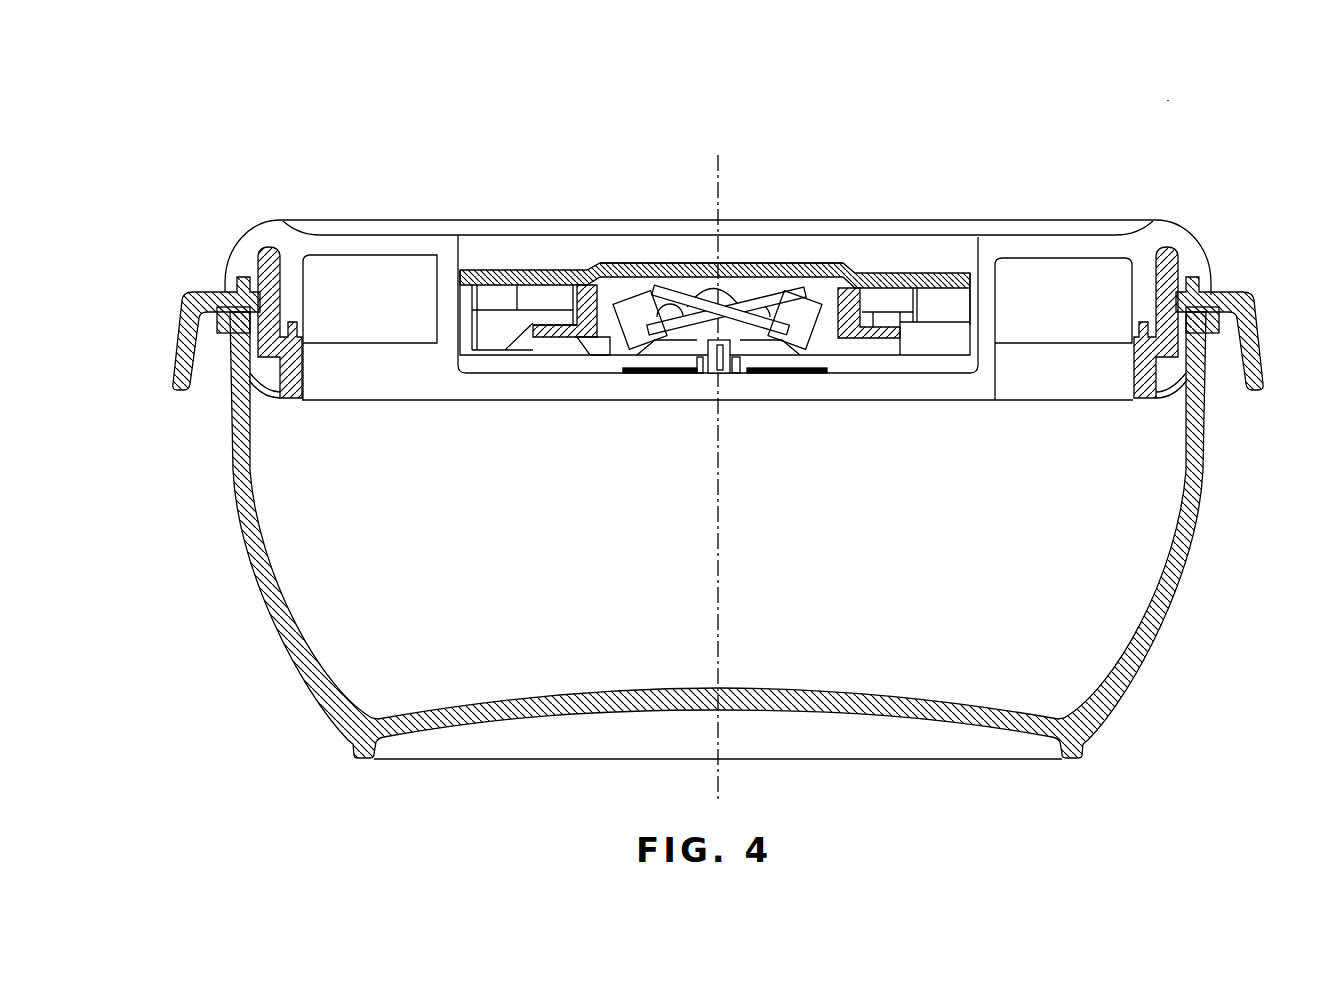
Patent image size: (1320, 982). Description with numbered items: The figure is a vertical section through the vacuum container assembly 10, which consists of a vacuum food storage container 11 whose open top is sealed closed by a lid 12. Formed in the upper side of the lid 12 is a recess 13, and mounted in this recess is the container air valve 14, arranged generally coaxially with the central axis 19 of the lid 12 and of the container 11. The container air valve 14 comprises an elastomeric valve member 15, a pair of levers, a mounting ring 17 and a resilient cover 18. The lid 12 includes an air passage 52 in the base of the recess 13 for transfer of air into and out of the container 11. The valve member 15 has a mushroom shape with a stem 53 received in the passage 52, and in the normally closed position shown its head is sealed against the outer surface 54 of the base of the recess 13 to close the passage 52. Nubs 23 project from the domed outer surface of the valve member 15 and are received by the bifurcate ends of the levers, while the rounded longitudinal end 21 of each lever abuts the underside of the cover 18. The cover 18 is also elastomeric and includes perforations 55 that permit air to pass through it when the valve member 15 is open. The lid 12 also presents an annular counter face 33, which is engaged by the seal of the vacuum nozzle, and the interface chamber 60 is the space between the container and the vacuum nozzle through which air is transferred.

The vacuum container assembly 10 is at (1168, 136).
The vacuum food storage container 11 is at (233, 478).
The lid 12 is at (670, 273).
The recess 13 is at (575, 243).
The container air valve 14 is at (922, 213).
The valve member 15 is at (661, 306).
The mounting ring 17 is at (513, 269).
The cover 18 is at (700, 264).
The central axis 19 is at (724, 173).
The longitudinal end 21 is at (633, 292).
The nub 23 is at (637, 268).
The annular counter face 33 is at (390, 231).
The air passage 52 is at (698, 380).
The stem 53 is at (731, 364).
The outer surface 54 is at (598, 350).
The perforations 55 is at (562, 341).
The interface chamber 60 is at (858, 236).